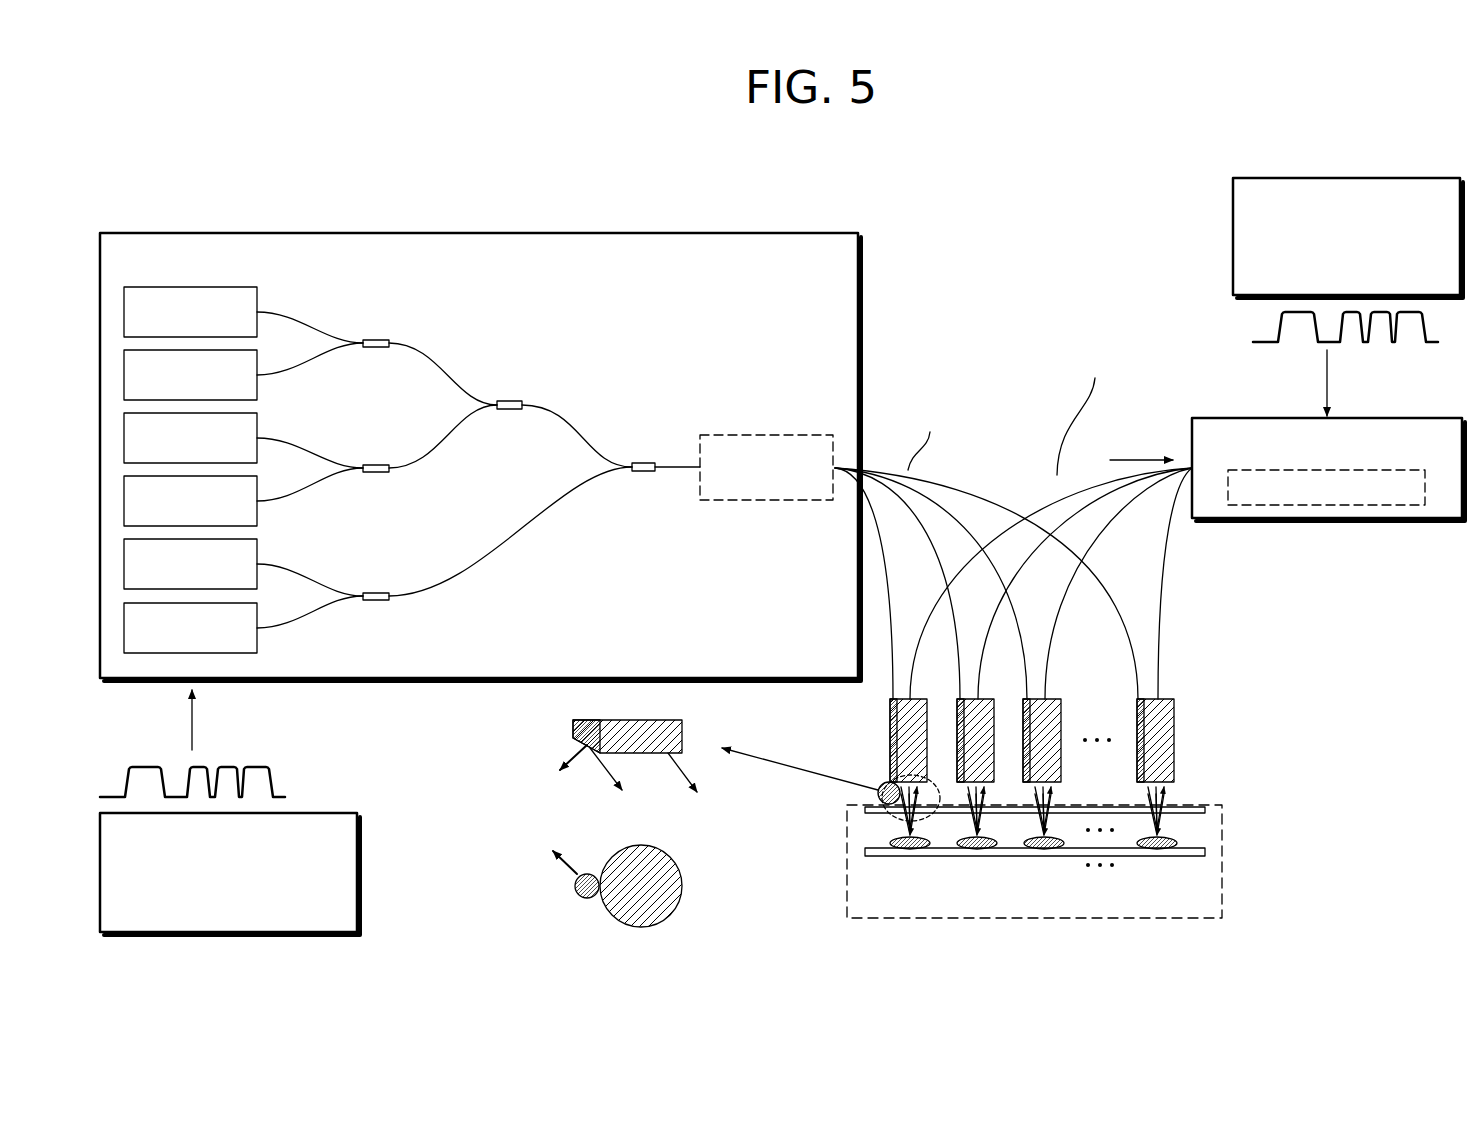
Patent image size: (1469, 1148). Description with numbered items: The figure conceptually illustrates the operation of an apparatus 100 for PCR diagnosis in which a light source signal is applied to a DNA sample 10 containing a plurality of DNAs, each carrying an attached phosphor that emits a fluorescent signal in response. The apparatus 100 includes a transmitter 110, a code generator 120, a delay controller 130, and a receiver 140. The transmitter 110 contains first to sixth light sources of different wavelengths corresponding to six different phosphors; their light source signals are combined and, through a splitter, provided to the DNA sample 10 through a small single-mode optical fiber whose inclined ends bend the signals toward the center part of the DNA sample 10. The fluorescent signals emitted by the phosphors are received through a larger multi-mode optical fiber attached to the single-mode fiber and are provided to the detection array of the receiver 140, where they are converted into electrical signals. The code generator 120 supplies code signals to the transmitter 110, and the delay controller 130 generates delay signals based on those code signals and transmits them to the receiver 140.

The apparatus 100 is at (1461, 150).
The transmitter 110 is at (480, 457).
The code generator 120 is at (230, 812).
The delay controller 130 is at (1351, 297).
The receiver 140 is at (1284, 469).
The DNA sample 10 is at (1034, 861).